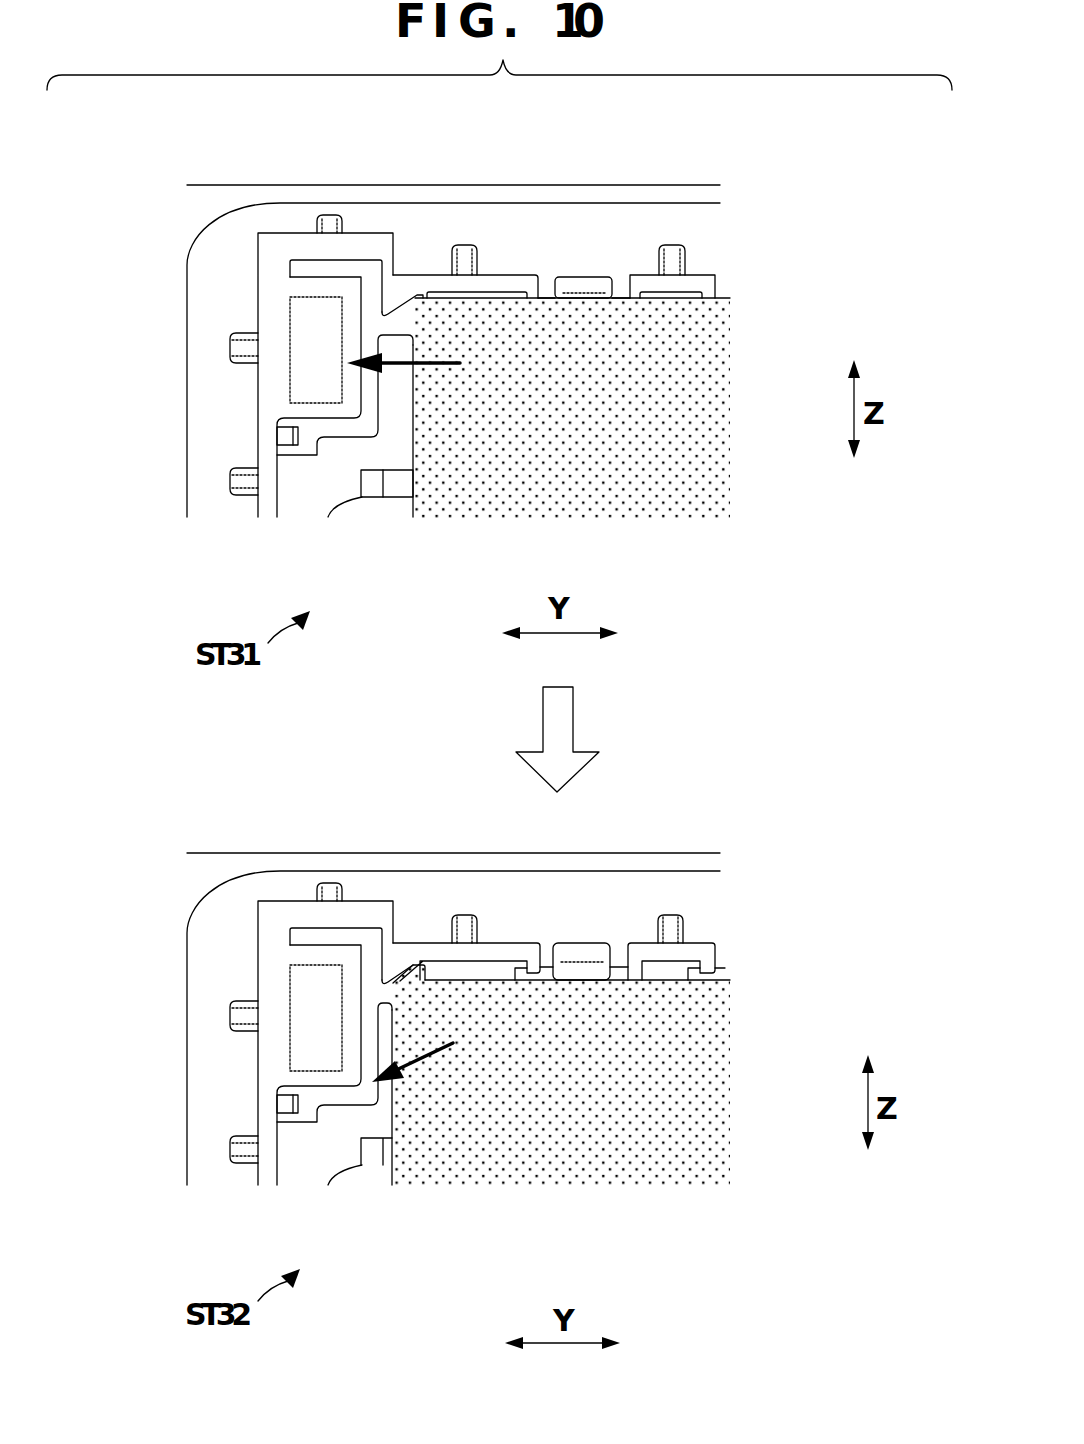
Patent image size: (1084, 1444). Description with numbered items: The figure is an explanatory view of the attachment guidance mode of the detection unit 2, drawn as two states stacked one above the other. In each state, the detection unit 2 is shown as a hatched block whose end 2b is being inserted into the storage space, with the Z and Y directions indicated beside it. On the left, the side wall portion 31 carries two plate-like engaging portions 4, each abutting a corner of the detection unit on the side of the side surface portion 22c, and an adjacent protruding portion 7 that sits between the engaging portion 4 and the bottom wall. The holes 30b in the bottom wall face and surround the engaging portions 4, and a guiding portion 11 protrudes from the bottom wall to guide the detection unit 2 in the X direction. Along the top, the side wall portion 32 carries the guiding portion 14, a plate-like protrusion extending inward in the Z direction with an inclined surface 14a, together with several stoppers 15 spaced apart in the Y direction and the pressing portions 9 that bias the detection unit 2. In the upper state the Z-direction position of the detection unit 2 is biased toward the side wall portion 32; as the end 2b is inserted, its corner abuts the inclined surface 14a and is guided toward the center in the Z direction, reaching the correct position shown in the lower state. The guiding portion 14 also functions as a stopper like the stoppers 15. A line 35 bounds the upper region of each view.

The detection unit 2 is at (710, 333).
The end of the detection unit 2b is at (430, 495).
The engaging portion 4 is at (325, 292).
The protruding portion 7 is at (280, 436).
The pressing portion 9 is at (584, 280).
The guiding portion 11 is at (390, 488).
The guiding portion 14 is at (396, 295).
The inclined surface 14a is at (419, 300).
The stopper 15 is at (540, 293).
The side surface portion 22c is at (413, 443).
The hole 30b is at (363, 268).
The side wall portion 31 is at (262, 461).
The side wall portion 32 is at (490, 280).
The reference line 35 is at (442, 201).